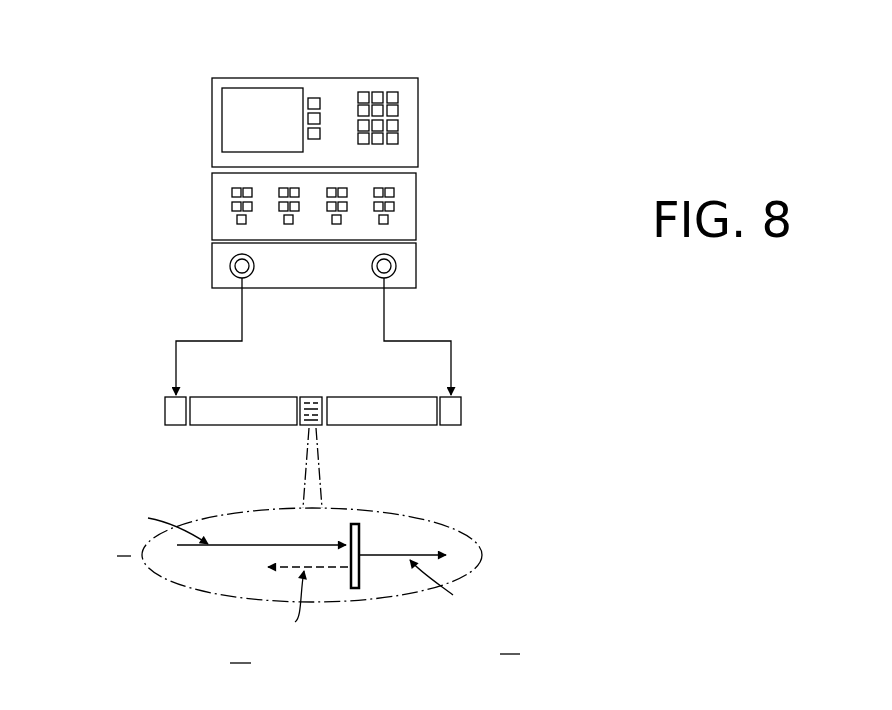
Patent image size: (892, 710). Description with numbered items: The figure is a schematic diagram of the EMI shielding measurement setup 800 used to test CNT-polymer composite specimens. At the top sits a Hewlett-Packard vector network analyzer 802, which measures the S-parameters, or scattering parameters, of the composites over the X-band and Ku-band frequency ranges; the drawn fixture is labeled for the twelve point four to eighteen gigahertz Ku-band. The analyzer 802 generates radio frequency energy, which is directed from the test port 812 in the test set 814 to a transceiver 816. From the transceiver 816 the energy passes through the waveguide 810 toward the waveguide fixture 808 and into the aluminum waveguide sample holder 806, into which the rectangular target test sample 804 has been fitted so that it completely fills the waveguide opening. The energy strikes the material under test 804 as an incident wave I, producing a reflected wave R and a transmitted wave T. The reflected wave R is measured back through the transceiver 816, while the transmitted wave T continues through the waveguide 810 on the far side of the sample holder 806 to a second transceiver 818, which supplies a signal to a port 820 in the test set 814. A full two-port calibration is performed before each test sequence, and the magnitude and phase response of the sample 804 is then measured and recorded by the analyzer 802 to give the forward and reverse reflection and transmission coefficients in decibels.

The EMI shielding measurement setup 800 is at (504, 149).
The vector network analyzer 802 is at (212, 136).
The target test sample 804 is at (533, 533).
The waveguide sample holder 806 is at (319, 430).
The waveguide assembly 808 is at (515, 420).
The waveguide 810 is at (265, 430).
The test port 812 is at (232, 257).
The test set 814 is at (398, 291).
The transceiver 816 is at (165, 402).
The transceiver 818 is at (462, 399).
The port 820 is at (395, 258).